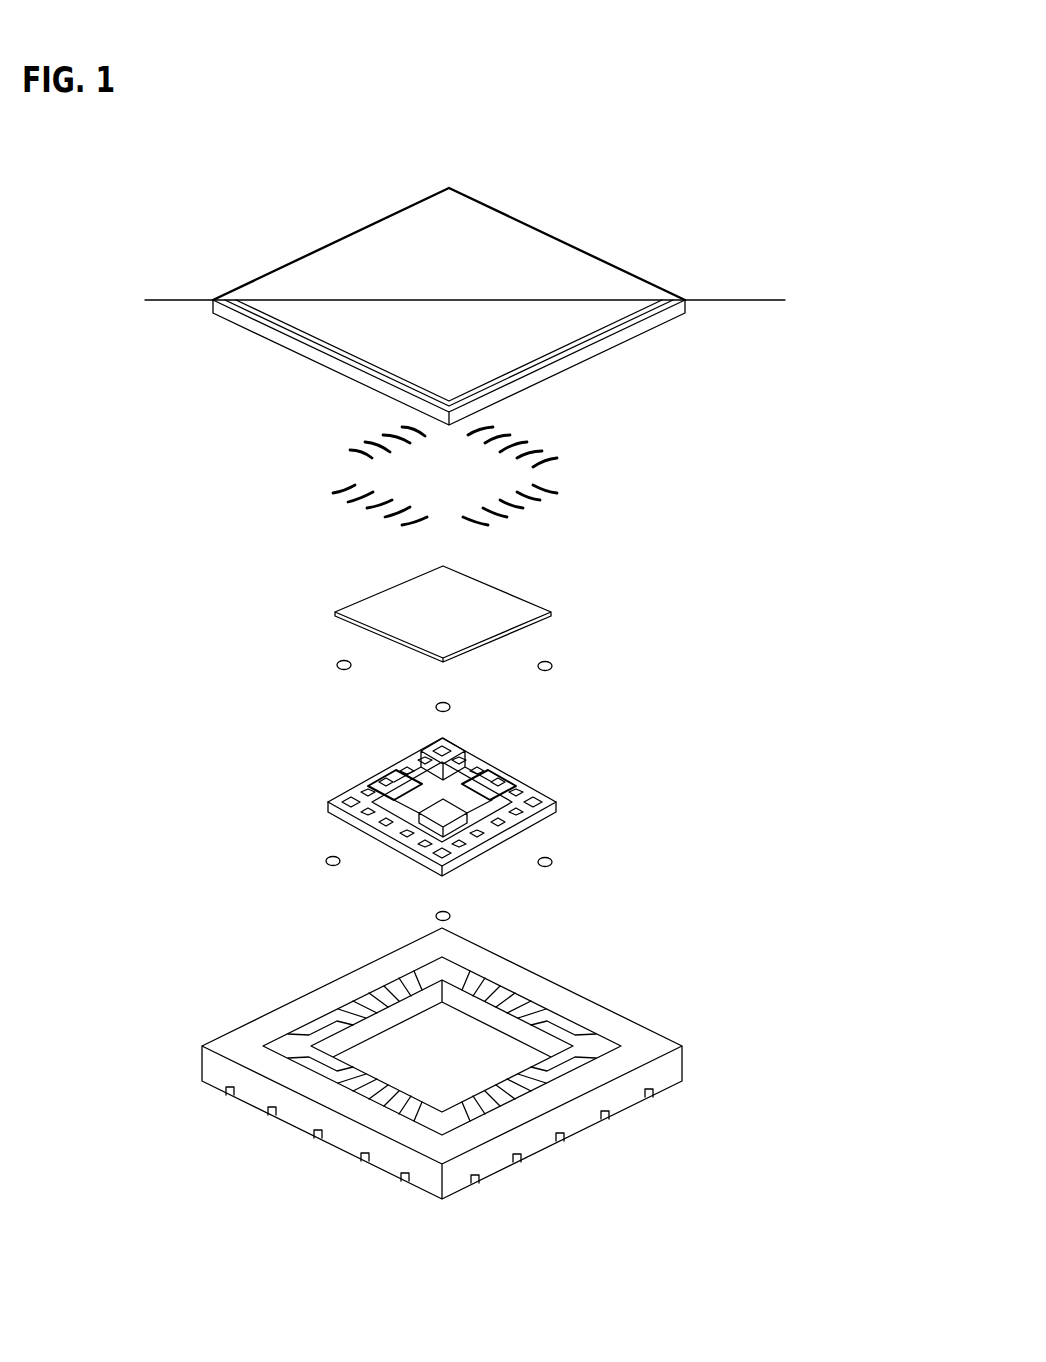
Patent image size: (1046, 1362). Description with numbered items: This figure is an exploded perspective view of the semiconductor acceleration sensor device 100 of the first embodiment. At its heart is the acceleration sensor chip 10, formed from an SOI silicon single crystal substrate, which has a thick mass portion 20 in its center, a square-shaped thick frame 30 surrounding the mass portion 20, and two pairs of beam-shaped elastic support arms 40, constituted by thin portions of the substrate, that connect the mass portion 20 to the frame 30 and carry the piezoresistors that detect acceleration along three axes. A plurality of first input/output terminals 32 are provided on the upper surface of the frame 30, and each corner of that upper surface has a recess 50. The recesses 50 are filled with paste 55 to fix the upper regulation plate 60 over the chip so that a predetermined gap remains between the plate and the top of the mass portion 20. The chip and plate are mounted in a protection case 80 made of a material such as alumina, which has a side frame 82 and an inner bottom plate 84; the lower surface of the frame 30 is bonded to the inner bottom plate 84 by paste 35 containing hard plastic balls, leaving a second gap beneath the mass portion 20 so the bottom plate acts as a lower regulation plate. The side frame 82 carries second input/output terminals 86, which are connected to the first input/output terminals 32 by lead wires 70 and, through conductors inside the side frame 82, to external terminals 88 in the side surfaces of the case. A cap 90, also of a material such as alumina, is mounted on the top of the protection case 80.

The acceleration sensor device 100 is at (181, 223).
The cap 90 is at (633, 278).
The lead wires 70 is at (563, 476).
The upper regulation plate 60 is at (513, 601).
The paste 55 is at (573, 662).
The acceleration sensor chip 10 is at (570, 815).
The mass portion 20 is at (438, 790).
The frame 30 is at (357, 829).
The input/output terminals 32 is at (358, 779).
The paste 35 is at (553, 862).
The elastic support arms 40 is at (473, 772).
The recess 50 is at (543, 793).
The protection case 80 is at (690, 1060).
The side frame 82 is at (547, 982).
The inner bottom plate 84 is at (391, 1051).
The second input/output terminals 86 is at (370, 1000).
The external terminals 88 is at (657, 1093).